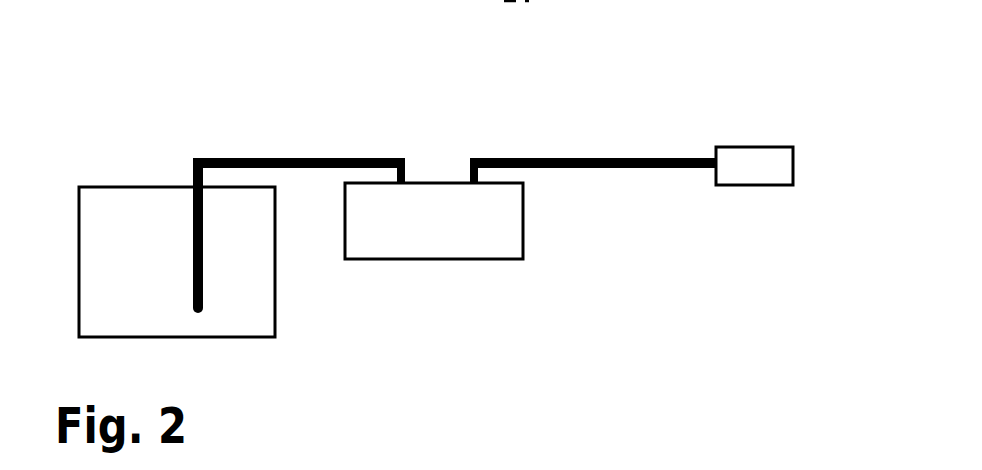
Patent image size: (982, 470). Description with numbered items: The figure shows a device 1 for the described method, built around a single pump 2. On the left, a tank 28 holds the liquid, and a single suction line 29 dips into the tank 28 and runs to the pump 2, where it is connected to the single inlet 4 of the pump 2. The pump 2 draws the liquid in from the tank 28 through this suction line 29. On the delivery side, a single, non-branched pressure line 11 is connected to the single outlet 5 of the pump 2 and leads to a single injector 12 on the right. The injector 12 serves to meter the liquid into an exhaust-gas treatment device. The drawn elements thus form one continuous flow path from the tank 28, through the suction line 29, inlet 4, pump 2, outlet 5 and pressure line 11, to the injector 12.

The device 1 is at (139, 68).
The pump 2 is at (478, 259).
The inlet 4 is at (413, 179).
The outlet 5 is at (467, 179).
The pressure line 11 is at (502, 158).
The injector 12 is at (758, 147).
The tank 28 is at (143, 187).
The suction line 29 is at (315, 158).